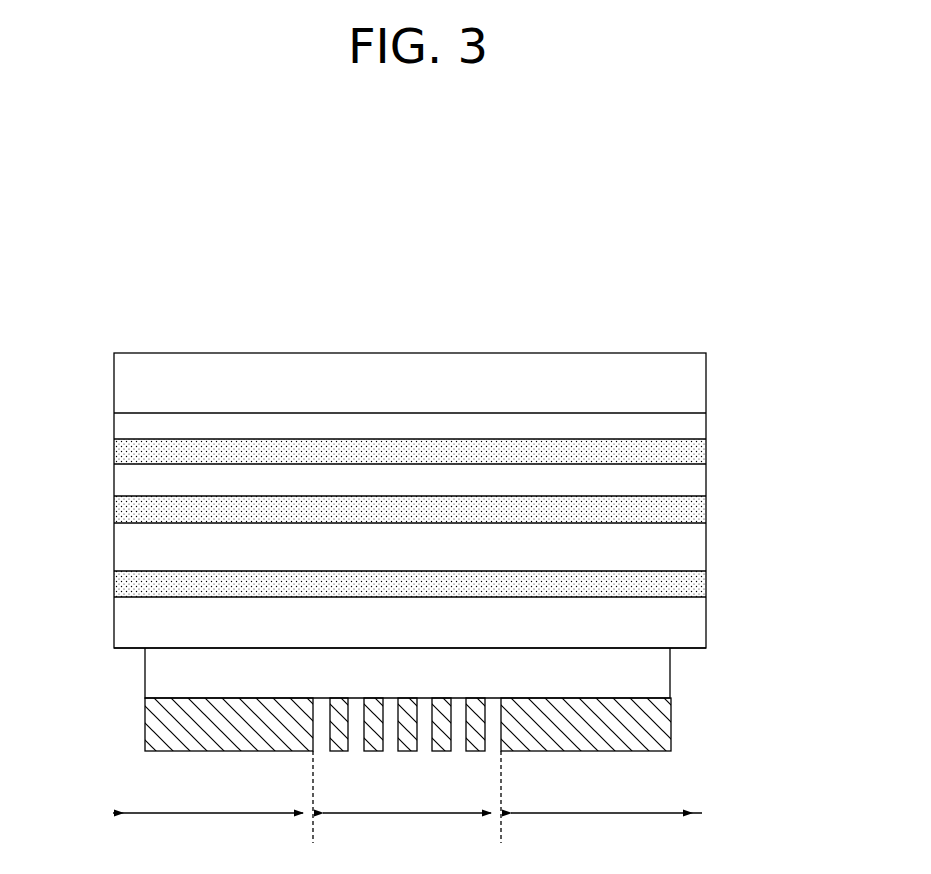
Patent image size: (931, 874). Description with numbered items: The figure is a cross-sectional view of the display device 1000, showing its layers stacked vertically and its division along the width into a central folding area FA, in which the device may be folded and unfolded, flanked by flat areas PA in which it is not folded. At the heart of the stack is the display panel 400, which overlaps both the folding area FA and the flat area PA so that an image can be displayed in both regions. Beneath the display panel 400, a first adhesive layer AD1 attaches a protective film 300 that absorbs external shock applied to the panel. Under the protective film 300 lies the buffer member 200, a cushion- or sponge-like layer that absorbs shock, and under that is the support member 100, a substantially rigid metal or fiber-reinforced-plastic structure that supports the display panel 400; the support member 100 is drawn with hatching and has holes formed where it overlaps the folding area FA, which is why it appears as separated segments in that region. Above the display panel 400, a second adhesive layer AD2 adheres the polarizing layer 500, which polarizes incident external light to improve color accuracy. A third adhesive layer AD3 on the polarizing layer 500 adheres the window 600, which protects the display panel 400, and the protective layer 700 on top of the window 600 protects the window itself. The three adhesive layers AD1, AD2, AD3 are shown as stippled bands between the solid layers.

The display device 1000 is at (630, 274).
The support member 100 is at (653, 725).
The buffer member 200 is at (652, 678).
The protective film 300 is at (688, 616).
The display panel 400 is at (688, 551).
The polarizing layer 500 is at (688, 479).
The window 600 is at (688, 429).
The protective layer 700 is at (688, 384).
The first adhesive layer AD1 is at (130, 584).
The second adhesive layer AD2 is at (130, 509).
The third adhesive layer AD3 is at (130, 452).
The flat area PA is at (407, 800).
The folding area FA is at (407, 831).